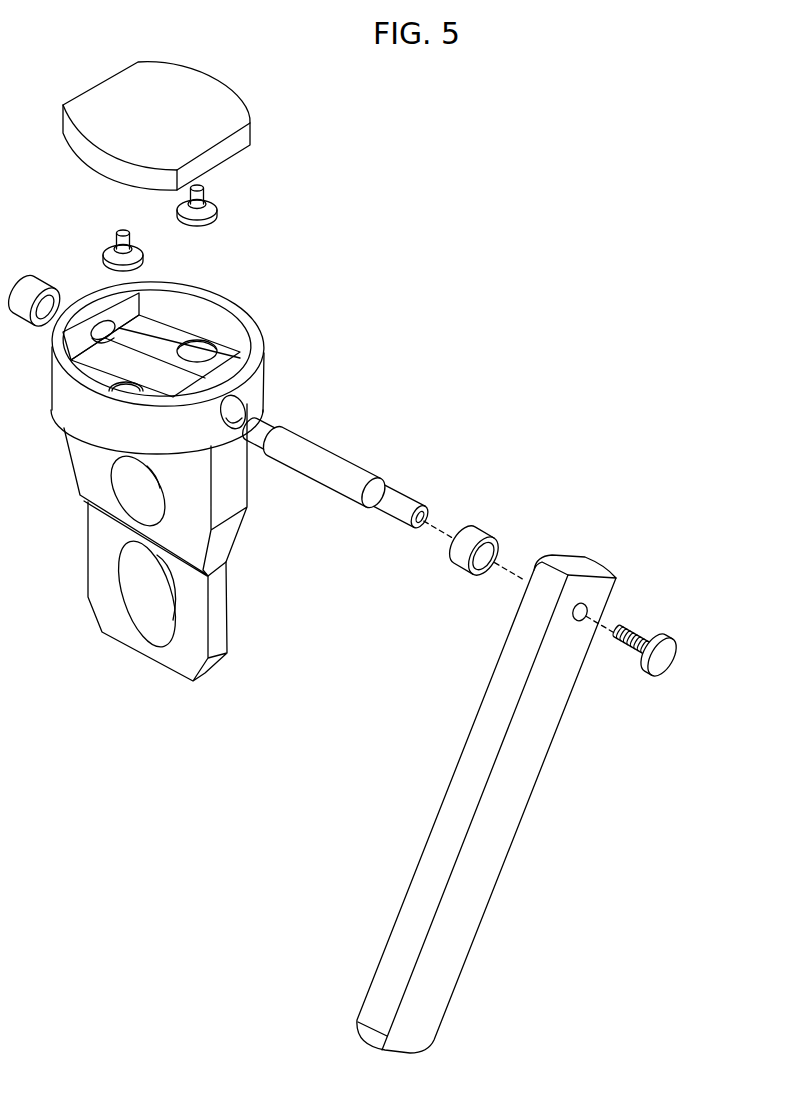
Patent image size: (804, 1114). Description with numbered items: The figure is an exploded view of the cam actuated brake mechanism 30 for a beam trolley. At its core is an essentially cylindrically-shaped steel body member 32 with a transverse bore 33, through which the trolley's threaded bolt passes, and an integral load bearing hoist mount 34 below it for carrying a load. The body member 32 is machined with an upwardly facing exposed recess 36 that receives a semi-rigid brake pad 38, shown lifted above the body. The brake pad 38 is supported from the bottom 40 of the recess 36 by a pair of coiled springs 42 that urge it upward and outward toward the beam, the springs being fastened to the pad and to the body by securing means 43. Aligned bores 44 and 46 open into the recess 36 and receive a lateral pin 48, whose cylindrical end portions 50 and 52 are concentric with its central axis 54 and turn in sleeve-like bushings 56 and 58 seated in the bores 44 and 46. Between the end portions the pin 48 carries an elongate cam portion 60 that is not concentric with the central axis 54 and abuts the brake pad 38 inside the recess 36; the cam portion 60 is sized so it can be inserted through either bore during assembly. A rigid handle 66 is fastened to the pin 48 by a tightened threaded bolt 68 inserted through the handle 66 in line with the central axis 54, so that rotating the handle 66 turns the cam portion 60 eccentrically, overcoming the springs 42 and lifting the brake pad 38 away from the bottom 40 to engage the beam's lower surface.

The brake mechanism 30 is at (378, 262).
The body member 32 is at (56, 478).
The transverse bore 33 is at (135, 493).
The load bearing hoist mount 34 is at (103, 547).
The recess 36 is at (218, 334).
The brake pad 38 is at (251, 138).
The bottom of recess 40 is at (160, 333).
The coiled springs 42 is at (178, 215).
The securing means 43 is at (201, 229).
The bore 44 is at (117, 341).
The bore 46 is at (222, 419).
The lateral pin 48 is at (422, 406).
The end portion 50 is at (279, 413).
The end portion 52 is at (400, 491).
The central axis 54 is at (502, 568).
The bushing 56 is at (22, 332).
The bushing 58 is at (456, 578).
The cam portion 60 is at (342, 448).
The handle 66 is at (441, 806).
The threaded bolt 68 is at (652, 680).